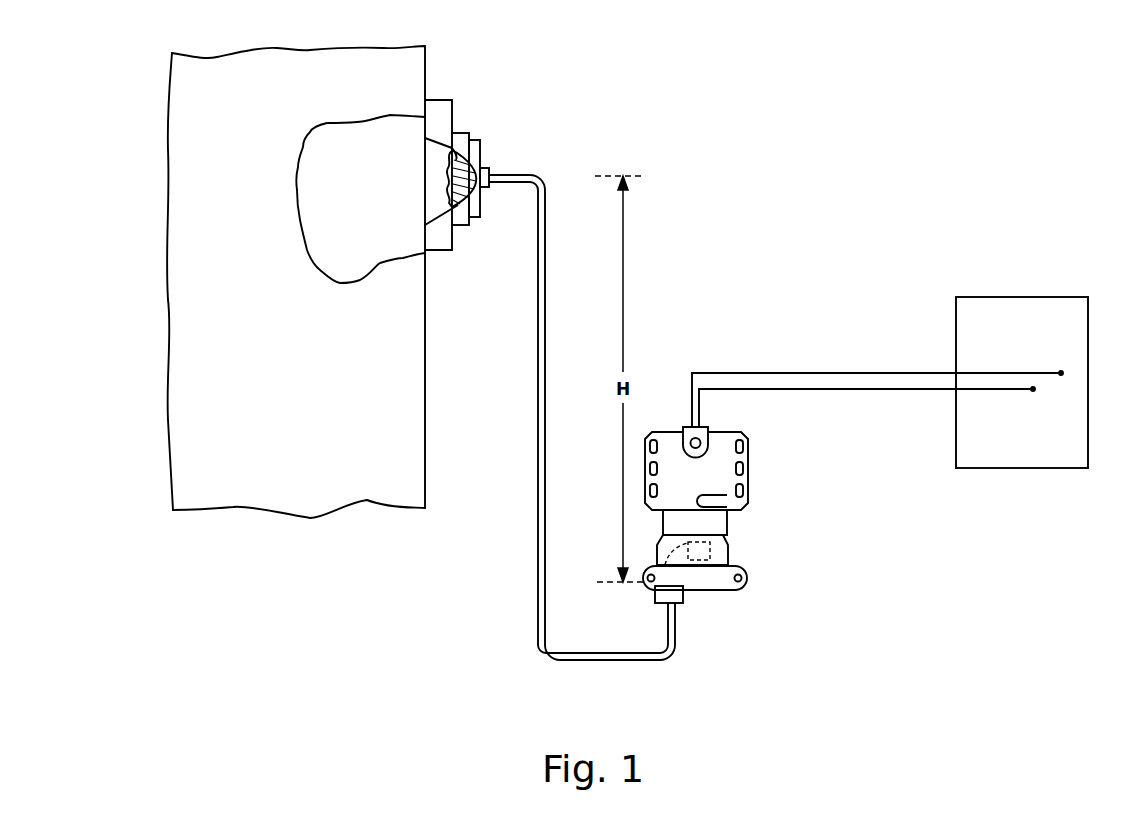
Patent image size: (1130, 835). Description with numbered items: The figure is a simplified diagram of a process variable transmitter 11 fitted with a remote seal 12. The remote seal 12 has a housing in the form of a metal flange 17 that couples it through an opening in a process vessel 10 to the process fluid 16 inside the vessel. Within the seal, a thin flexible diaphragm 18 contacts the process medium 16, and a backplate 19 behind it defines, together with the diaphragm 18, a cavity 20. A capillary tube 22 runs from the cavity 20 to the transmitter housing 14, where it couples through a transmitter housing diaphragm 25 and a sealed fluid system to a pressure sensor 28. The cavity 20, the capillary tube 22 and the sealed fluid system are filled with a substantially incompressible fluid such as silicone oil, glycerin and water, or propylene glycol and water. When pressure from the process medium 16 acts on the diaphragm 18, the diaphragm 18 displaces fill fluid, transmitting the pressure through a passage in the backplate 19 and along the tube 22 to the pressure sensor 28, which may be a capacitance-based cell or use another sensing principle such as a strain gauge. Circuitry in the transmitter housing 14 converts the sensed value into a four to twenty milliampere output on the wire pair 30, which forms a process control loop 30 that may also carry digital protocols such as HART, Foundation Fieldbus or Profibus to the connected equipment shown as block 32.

The process vessel 10 is at (275, 492).
The process variable transmitter 11 is at (693, 632).
The remote seal 12 is at (455, 121).
The transmitter housing 14 is at (712, 430).
The process fluid 16 is at (335, 239).
The housing (metal flange) 17 is at (450, 250).
The flexible diaphragm 18 is at (447, 185).
The backplate 19 is at (452, 158).
The cavity 20 is at (458, 150).
The capillary tube 22 is at (546, 227).
The transmitter housing diaphragm 25 is at (687, 590).
The pressure sensor 28 is at (710, 553).
The wire pair (process control loop) 30 is at (847, 388).
The controller 32 is at (1013, 297).